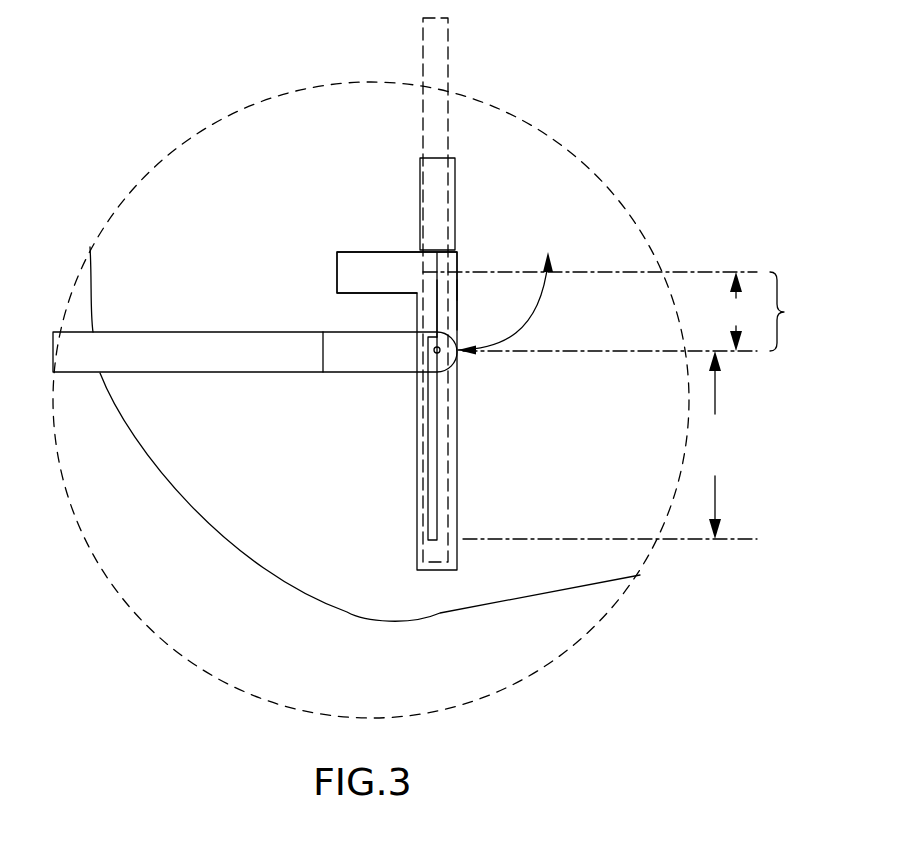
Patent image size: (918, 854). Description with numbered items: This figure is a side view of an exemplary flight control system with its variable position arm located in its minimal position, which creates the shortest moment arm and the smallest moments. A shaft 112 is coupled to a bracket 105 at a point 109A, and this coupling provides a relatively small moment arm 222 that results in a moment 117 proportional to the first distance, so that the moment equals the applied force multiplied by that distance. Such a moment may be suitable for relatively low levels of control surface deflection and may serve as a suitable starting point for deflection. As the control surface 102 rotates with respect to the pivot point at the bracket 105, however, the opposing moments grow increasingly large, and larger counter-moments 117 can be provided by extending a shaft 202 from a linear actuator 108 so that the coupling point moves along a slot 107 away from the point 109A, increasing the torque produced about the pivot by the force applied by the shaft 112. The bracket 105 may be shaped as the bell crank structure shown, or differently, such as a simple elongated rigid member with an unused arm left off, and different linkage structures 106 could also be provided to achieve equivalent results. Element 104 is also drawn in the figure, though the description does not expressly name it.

The control surface 102 is at (347, 612).
The bracket 104 is at (437, 272).
The bracket 105 is at (450, 383).
The linkage structure 106 is at (447, 47).
The slot 107 is at (433, 458).
The linear actuator 108 is at (455, 215).
The point 109A is at (460, 352).
The shaft 112 is at (263, 373).
The moment 117 is at (542, 297).
The shaft 202 is at (438, 290).
The moment arm 222 is at (618, 405).